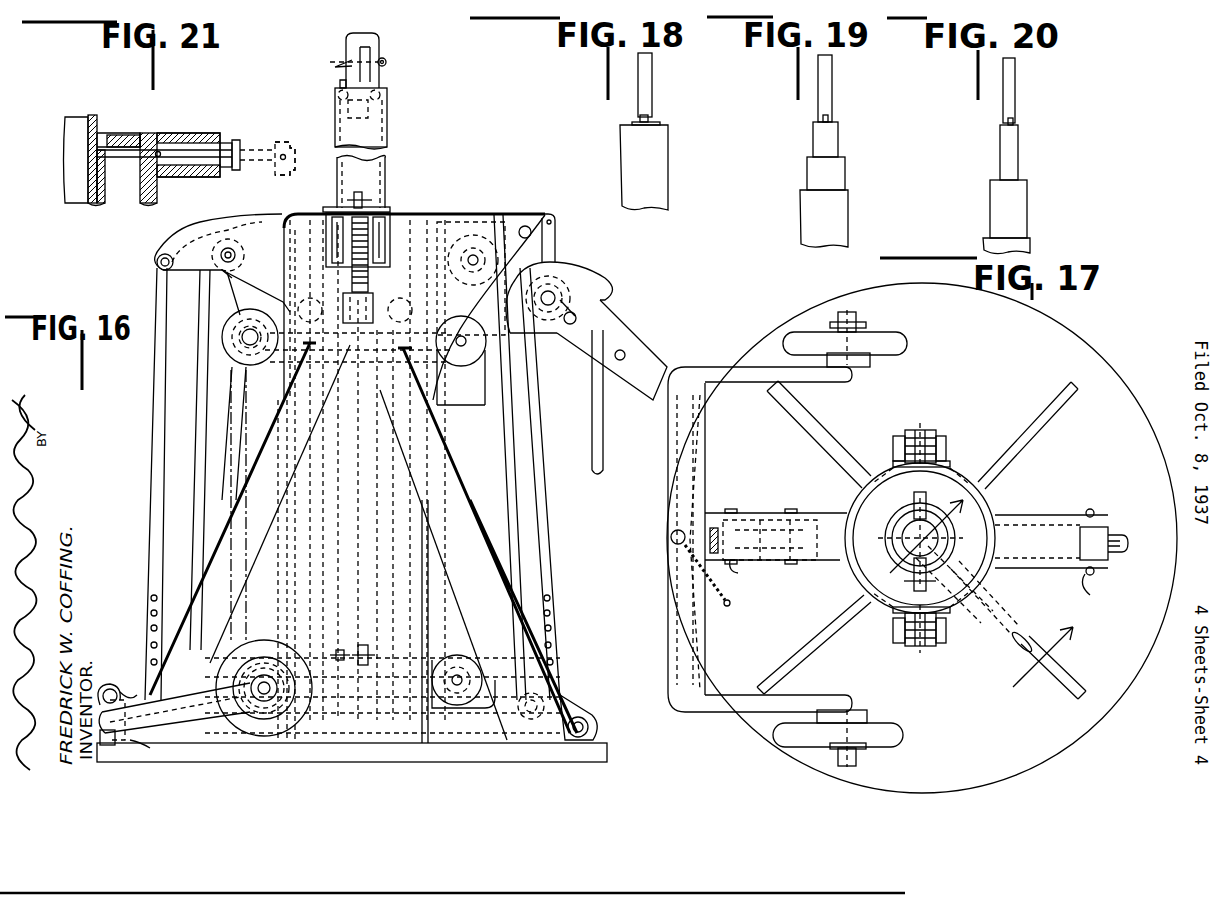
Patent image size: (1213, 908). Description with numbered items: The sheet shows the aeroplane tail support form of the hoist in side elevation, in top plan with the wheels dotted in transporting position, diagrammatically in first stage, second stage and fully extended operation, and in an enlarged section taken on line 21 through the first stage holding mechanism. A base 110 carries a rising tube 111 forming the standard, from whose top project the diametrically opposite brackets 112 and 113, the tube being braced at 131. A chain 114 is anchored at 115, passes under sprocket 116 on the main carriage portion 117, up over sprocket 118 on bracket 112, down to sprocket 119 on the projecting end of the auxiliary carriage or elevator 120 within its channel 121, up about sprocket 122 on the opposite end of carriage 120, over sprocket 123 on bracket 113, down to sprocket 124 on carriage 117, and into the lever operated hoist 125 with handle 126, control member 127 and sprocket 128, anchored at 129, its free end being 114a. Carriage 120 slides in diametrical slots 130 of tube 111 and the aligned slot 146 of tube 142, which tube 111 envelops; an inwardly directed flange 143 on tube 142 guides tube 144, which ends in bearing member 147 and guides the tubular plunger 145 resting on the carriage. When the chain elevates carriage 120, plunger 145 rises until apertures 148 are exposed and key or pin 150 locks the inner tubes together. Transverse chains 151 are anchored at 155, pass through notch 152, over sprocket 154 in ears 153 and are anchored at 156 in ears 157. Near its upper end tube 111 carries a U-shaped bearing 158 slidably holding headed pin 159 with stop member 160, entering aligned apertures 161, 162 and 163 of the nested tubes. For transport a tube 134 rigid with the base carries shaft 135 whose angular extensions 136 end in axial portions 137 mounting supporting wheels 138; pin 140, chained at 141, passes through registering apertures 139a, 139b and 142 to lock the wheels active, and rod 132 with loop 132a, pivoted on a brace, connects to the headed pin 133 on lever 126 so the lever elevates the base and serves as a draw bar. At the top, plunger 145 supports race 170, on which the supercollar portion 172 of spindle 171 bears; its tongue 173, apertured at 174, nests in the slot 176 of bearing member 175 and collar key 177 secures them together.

In FIG. 17, the sectional view 21 is at (972, 602).
In FIG. 16, the base 110 is at (583, 762).
In FIG. 17, the base 110 is at (1038, 757).
In FIG. 21, the tube 111 is at (158, 196).
In FIG. 18, the tube 111 is at (668, 195).
In FIG. 19, the tube 111 is at (848, 220).
In FIG. 20, the tube 111 is at (1030, 245).
In FIG. 16, the tube 111 is at (283, 385).
In FIG. 17, the tube 111 is at (988, 503).
In FIG. 21, the extension or bracket 112 is at (255, 228).
In FIG. 16, the extension or bracket 112 is at (255, 228).
In FIG. 17, the extension or bracket 112 is at (765, 512).
In FIG. 16, the extension or bracket 113 is at (467, 217).
In FIG. 17, the extension or bracket 113 is at (1068, 515).
In FIG. 16, the chain 114 is at (158, 430).
In FIG. 17, the chain 114 is at (714, 527).
In FIG. 16, the free end of the chain 114a is at (592, 385).
In FIG. 16, the anchor 115 is at (160, 266).
In FIG. 17, the anchor 115 is at (730, 563).
In FIG. 16, the sprocket 116 is at (160, 695).
In FIG. 16, the main carriage portion 117 is at (482, 745).
In FIG. 16, the sprocket 118 is at (220, 273).
In FIG. 17, the sprocket 118 is at (812, 550).
In FIG. 16, the sprocket 119 is at (232, 366).
In FIG. 16, the auxiliary carriage or elevator 120 is at (446, 370).
In FIG. 16, the channel 121 is at (430, 672).
In FIG. 16, the sprocket 122 is at (470, 368).
In FIG. 16, the sprocket 123 is at (445, 300).
In FIG. 16, the sprocket 124 is at (548, 702).
In FIG. 16, the lever operated hoist 125 is at (575, 280).
In FIG. 17, the lever operated hoist 125 is at (1110, 530).
In FIG. 16, the handle 126 is at (632, 358).
In FIG. 16, the control member 127 is at (580, 312).
In FIG. 16, the sprocket 128 is at (555, 290).
In FIG. 16, the anchor 129 is at (556, 212).
In FIG. 17, the anchor 129 is at (1090, 595).
In FIG. 16, the diametrical slots 130 is at (238, 358).
In FIG. 16, the braces 131 is at (210, 568).
In FIG. 17, the braces 131 is at (822, 427).
In FIG. 16, the rod or tie 132 is at (555, 685).
In FIG. 16, the elongated loop 132a is at (590, 725).
In FIG. 16, the headed pin 133 is at (620, 362).
In FIG. 16, the tube 134 is at (110, 745).
In FIG. 17, the tube 134 is at (700, 648).
In FIG. 17, the shaft 135 is at (685, 673).
In FIG. 16, the angular extension 136 is at (205, 715).
In FIG. 17, the angular extension 136 is at (740, 370).
In FIG. 16, the axial portion 137 is at (262, 700).
In FIG. 17, the axial portion 137 is at (857, 340).
In FIG. 17, the supporting wheel 138 is at (903, 350).
In FIG. 16, the aperture 139a is at (105, 686).
In FIG. 16, the aperture 139b is at (150, 745).
In FIG. 16, the pin 140 is at (118, 692).
In FIG. 17, the pin 140 is at (672, 534).
In FIG. 17, the chain 141 is at (712, 593).
In FIG. 21, the tube 142 is at (140, 187).
In FIG. 19, the tube 142 is at (838, 174).
In FIG. 20, the tube 142 is at (1027, 192).
In FIG. 16, the tube 142 is at (275, 240).
In FIG. 21, the inwardly directed flange 143 is at (120, 135).
In FIG. 16, the inwardly directed flange 143 is at (318, 207).
In FIG. 21, the tube 144 is at (97, 203).
In FIG. 18, the tube 144 is at (632, 123).
In FIG. 19, the tube 144 is at (838, 140).
In FIG. 20, the tube 144 is at (1018, 148).
In FIG. 16, the tube 144 is at (350, 230).
In FIG. 21, the tubular plunger 145 is at (85, 125).
In FIG. 18, the tubular plunger 145 is at (652, 95).
In FIG. 19, the tubular plunger 145 is at (832, 95).
In FIG. 20, the tubular plunger 145 is at (1014, 90).
In FIG. 16, the tubular plunger 145 is at (358, 193).
In FIG. 16, the slot 146 is at (316, 311).
In FIG. 16, the bearing member 147 is at (395, 660).
In FIG. 16, the apertures 148 is at (368, 210).
In FIG. 18, the key or pin 150 is at (650, 118).
In FIG. 19, the key or pin 150 is at (830, 120).
In FIG. 20, the key or pin 150 is at (1015, 119).
In FIG. 16, the key or pin 150 is at (373, 200).
In FIG. 16, the chains 151 is at (360, 570).
In FIG. 17, the chains 151 is at (935, 442).
In FIG. 16, the notch or slot 152 is at (373, 270).
In FIG. 17, the notch or slot 152 is at (958, 473).
In FIG. 16, the ears 153 is at (340, 257).
In FIG. 17, the ears 153 is at (893, 447).
In FIG. 16, the sprocket 154 is at (372, 226).
In FIG. 17, the sprocket 154 is at (920, 441).
In FIG. 16, the anchor 155 is at (300, 450).
In FIG. 16, the anchor 156 is at (320, 705).
In FIG. 16, the ears 157 is at (363, 680).
In FIG. 21, the U-shaped or outboard bearing 158 is at (210, 133).
In FIG. 21, the headed pin 159 is at (190, 155).
In FIG. 21, the stop member 160 is at (162, 153).
In FIG. 21, the aperture 161 is at (155, 133).
In FIG. 21, the aperture 162 is at (148, 133).
In FIG. 21, the aperture 163 is at (101, 135).
In FIG. 16, the race or antifriction structure 170 is at (375, 105).
In FIG. 16, the spindle 171 is at (350, 112).
In FIG. 16, the supercollar portion 172 is at (340, 86).
In FIG. 16, the tongue 173 is at (357, 56).
In FIG. 16, the aperture 174 is at (340, 66).
In FIG. 16, the bearing member 175 is at (380, 36).
In FIG. 16, the slot 176 is at (368, 60).
In FIG. 16, the collar key 177 is at (388, 62).